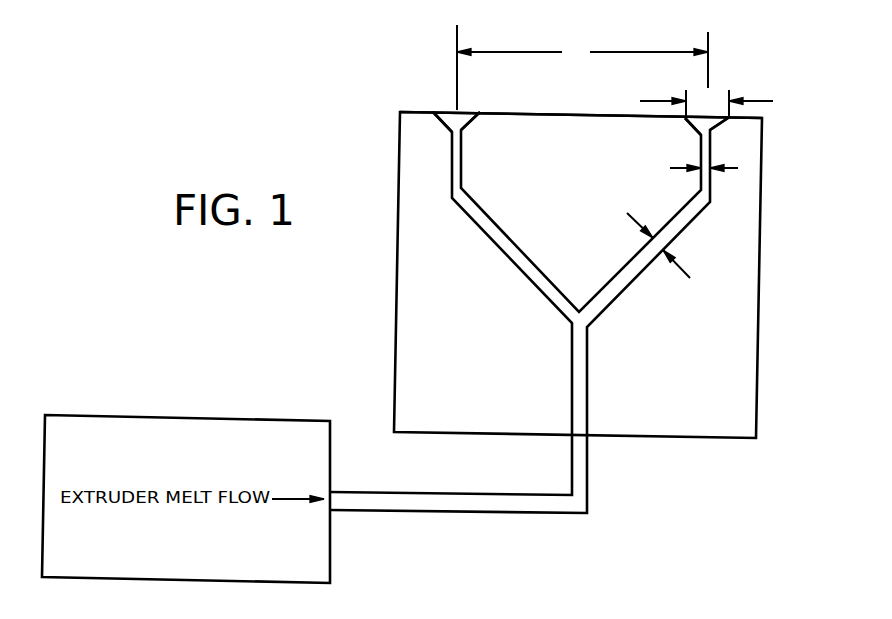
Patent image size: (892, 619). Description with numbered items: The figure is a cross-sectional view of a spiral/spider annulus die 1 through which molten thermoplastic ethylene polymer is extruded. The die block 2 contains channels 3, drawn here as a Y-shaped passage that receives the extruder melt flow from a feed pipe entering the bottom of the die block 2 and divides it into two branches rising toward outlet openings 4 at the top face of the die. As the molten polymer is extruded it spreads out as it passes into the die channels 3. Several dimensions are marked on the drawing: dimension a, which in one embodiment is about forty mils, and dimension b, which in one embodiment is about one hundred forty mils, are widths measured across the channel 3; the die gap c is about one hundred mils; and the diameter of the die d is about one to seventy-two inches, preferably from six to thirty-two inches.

The spiral/spider annulus die 1 is at (538, 111).
The die block 2 is at (759, 343).
The channels 3 is at (572, 345).
The channel outlet openings 4 is at (454, 122).
The dimension a is at (711, 168).
The dimension b is at (666, 256).
The die gap c is at (706, 103).
The diameter of the die d is at (582, 67).